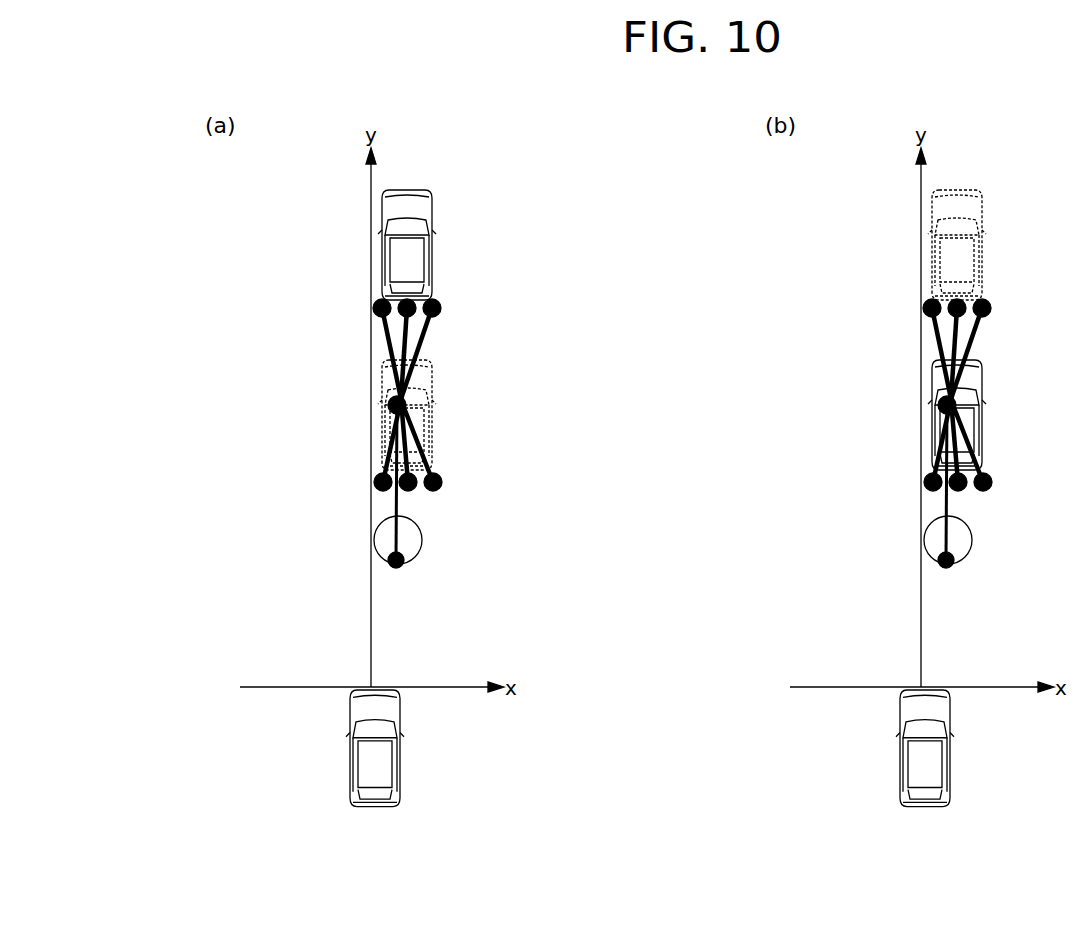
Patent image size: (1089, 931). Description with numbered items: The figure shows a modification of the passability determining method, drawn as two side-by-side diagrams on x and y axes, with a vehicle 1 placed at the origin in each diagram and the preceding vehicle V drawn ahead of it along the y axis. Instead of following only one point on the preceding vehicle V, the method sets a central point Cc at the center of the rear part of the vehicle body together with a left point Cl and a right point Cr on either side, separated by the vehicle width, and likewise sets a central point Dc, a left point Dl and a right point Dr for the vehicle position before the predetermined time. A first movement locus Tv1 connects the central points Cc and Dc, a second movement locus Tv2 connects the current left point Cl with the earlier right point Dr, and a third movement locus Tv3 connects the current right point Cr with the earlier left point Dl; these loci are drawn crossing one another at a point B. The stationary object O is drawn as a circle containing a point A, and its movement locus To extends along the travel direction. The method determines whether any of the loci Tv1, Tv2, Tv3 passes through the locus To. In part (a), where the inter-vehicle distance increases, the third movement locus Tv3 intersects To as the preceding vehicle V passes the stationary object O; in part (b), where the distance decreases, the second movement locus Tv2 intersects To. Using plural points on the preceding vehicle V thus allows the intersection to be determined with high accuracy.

The own vehicle 1 is at (400, 758).
The preceding vehicle V is at (432, 228).
The predicted collision point B is at (388, 410).
The object position A is at (398, 569).
The stationary object O is at (420, 548).
The movement locus of the stationary object To is at (392, 512).
The first movement locus Tv1 is at (404, 336).
The second movement locus Tv2 is at (389, 350).
The third movement locus Tv3 is at (418, 347).
The current left point Cl is at (376, 314).
The current central point Cc is at (410, 316).
The current right point Cr is at (442, 308).
The left point before the predetermined time Dl is at (376, 486).
The central point before the predetermined time Dc is at (412, 490).
The right point before the predetermined time Dr is at (442, 482).